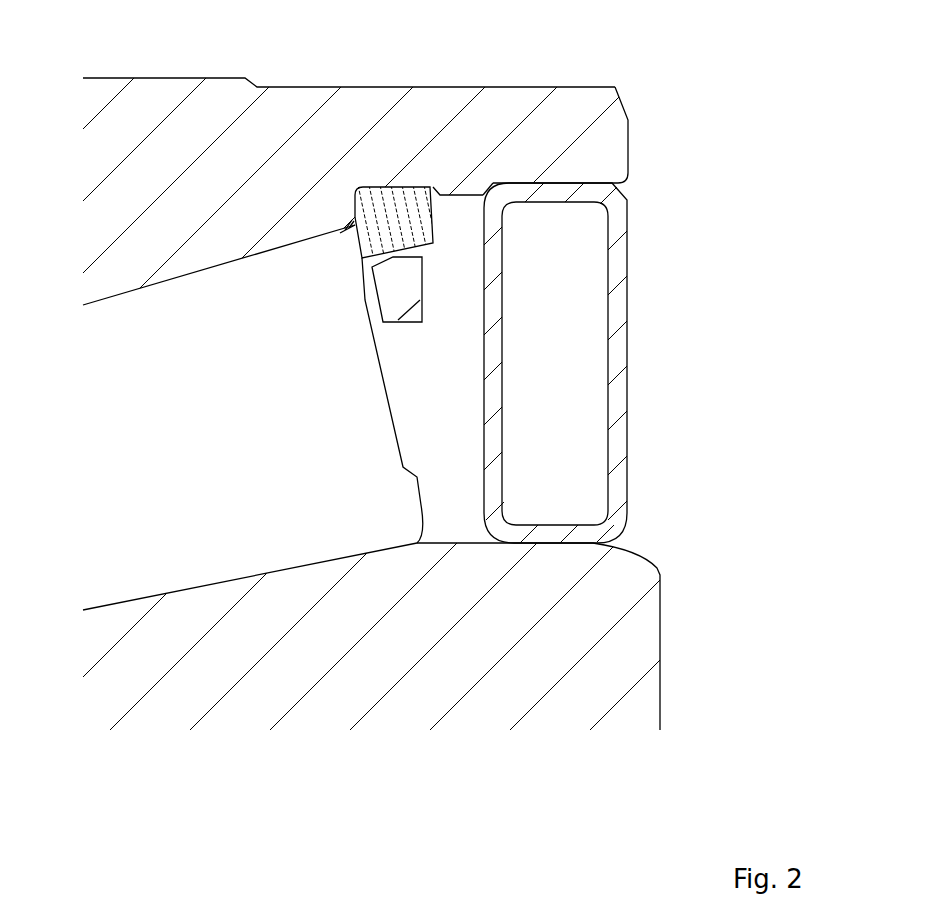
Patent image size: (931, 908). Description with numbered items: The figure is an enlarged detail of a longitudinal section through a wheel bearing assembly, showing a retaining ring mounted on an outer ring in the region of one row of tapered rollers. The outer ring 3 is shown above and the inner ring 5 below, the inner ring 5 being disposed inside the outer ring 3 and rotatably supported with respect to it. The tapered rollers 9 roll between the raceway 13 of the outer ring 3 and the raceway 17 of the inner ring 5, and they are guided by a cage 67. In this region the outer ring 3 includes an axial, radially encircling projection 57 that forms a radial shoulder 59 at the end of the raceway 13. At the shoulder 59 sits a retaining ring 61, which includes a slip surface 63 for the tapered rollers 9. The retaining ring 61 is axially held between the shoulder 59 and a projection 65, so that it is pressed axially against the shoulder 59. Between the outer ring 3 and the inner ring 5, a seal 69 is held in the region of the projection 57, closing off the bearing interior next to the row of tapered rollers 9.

The outer ring 3 is at (97, 160).
The inner ring 5 is at (632, 638).
The tapered rollers 9 is at (150, 453).
The raceway 13 is at (212, 258).
The raceway 17 is at (284, 578).
The projection 57 is at (592, 103).
The shoulder 59 is at (342, 212).
The retaining ring 61 is at (423, 198).
The slip surface 63 is at (370, 247).
The projection 65 is at (462, 181).
The cage 67 is at (405, 292).
The seal 69 is at (613, 242).